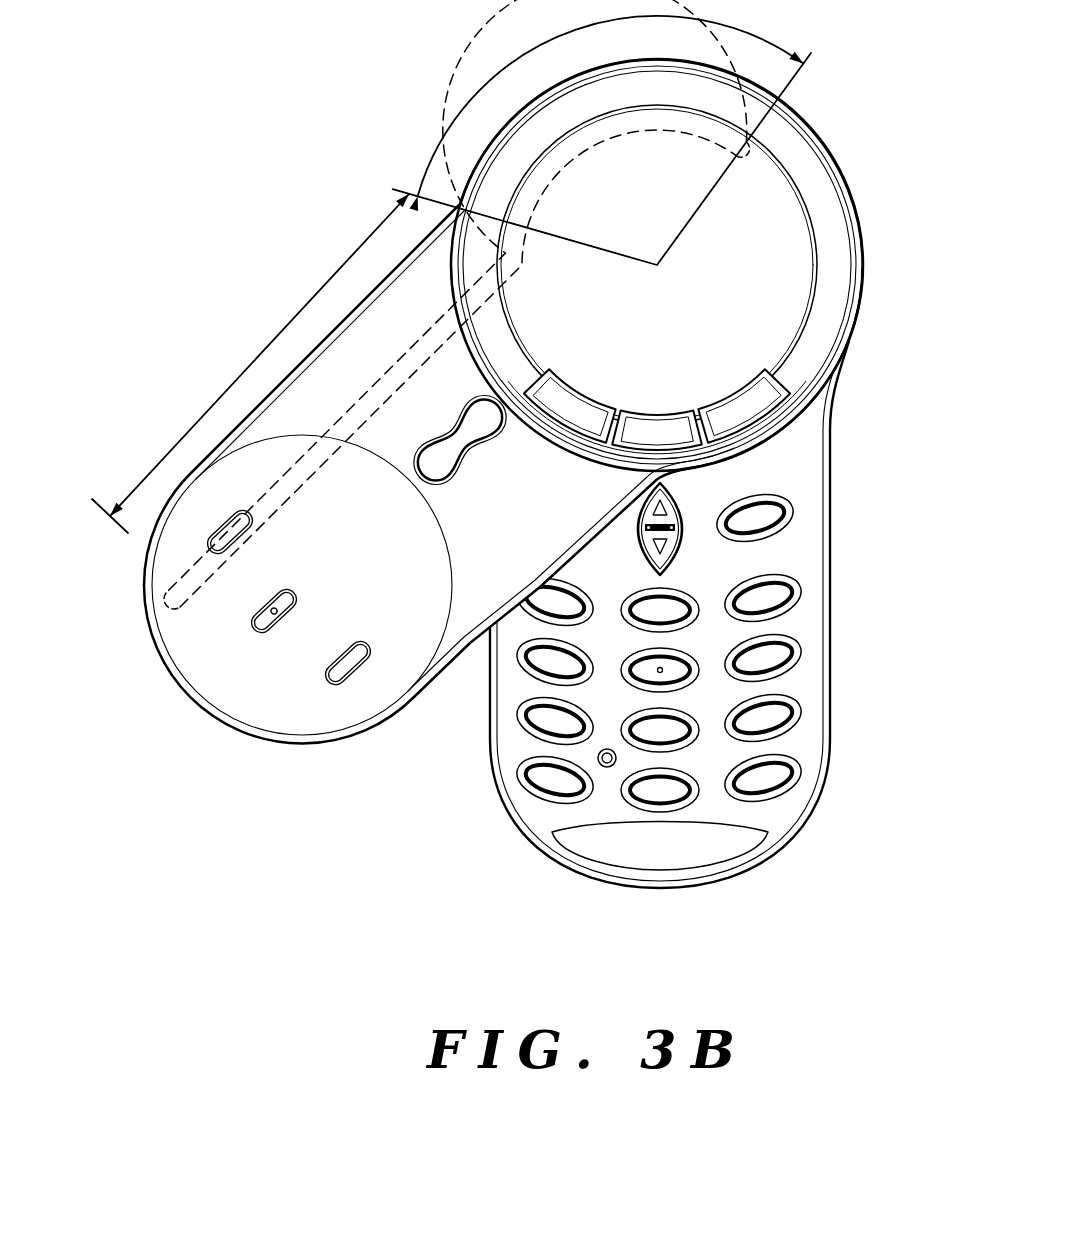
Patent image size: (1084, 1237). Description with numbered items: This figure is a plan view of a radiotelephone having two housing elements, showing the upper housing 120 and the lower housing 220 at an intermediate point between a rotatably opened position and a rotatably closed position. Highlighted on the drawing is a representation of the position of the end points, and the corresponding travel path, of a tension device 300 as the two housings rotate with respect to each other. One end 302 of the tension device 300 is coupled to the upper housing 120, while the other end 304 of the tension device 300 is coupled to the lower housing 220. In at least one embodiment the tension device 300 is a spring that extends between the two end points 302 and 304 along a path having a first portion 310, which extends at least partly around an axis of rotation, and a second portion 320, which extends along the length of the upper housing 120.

The upper housing 120 is at (320, 375).
The lower housing 220 is at (803, 627).
The tension device 300 is at (302, 485).
The end of tension device 302 is at (172, 607).
The other end of tension device 304 is at (747, 157).
The first portion of path 310 is at (566, 33).
The second portion of path 320 is at (208, 410).